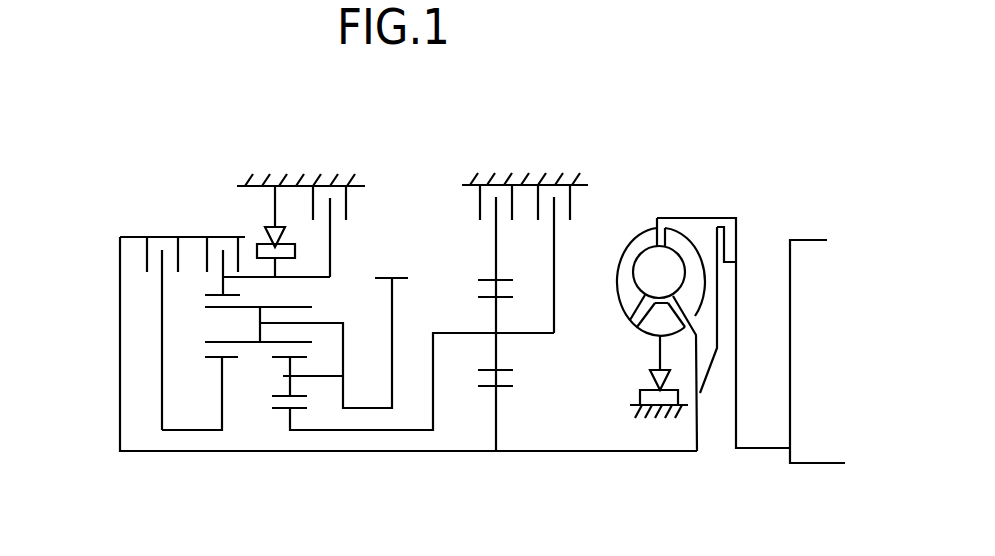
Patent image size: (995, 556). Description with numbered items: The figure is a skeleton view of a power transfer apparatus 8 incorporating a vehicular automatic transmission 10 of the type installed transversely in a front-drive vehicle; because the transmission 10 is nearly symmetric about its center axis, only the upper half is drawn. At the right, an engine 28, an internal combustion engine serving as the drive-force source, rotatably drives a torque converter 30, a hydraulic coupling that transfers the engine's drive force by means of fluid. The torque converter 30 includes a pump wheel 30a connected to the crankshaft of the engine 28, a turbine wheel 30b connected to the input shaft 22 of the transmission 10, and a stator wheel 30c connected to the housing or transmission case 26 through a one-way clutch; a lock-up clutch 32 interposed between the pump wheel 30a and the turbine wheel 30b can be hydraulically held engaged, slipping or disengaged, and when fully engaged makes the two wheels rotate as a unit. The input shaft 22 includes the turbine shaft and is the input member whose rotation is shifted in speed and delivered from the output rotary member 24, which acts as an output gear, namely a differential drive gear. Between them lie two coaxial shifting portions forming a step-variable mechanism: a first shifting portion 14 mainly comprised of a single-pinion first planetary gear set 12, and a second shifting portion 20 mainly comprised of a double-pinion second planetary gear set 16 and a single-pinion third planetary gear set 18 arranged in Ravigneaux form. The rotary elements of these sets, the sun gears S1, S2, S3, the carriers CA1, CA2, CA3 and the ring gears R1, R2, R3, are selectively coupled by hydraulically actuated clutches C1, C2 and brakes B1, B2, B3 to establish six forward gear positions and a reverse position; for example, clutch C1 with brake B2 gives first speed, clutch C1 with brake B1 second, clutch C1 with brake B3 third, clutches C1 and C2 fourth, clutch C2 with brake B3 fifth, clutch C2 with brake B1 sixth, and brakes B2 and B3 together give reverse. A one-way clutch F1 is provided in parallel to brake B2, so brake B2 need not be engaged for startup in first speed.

The power transfer apparatus 8 is at (712, 63).
The vehicular automatic transmission 10 is at (192, 177).
The first planetary gear set 12 is at (495, 468).
The first shifting portion 14 is at (580, 468).
The second planetary gear set 16 is at (292, 463).
The third planetary gear set 18 is at (226, 458).
The second shifting portion 20 is at (162, 473).
The input shaft 22 is at (673, 451).
The output rotary member 24 is at (402, 276).
The housing (transmission case) 26 is at (300, 180).
The engine 28 is at (808, 253).
The torque converter 30 is at (677, 289).
The pump wheel 30a is at (623, 275).
The turbine wheel 30b is at (695, 290).
The stator wheel 30c is at (646, 335).
The lock-up clutch 32 is at (722, 270).
The one-way clutch F1 is at (273, 238).
The clutch C1 is at (182, 321).
The clutch C2 is at (222, 253).
The brake B1 is at (571, 259).
The brake B2 is at (347, 231).
The brake B3 is at (478, 318).
The ring gear R1 is at (486, 279).
The ring gear R2 is at (167, 314).
The ring gear R3 is at (213, 290).
The carrier CA1 is at (517, 335).
The carrier CA2 is at (361, 343).
The carrier CA3 is at (328, 322).
The sun gear S1 is at (503, 387).
The sun gear S2 is at (283, 413).
The sun gear S3 is at (220, 358).